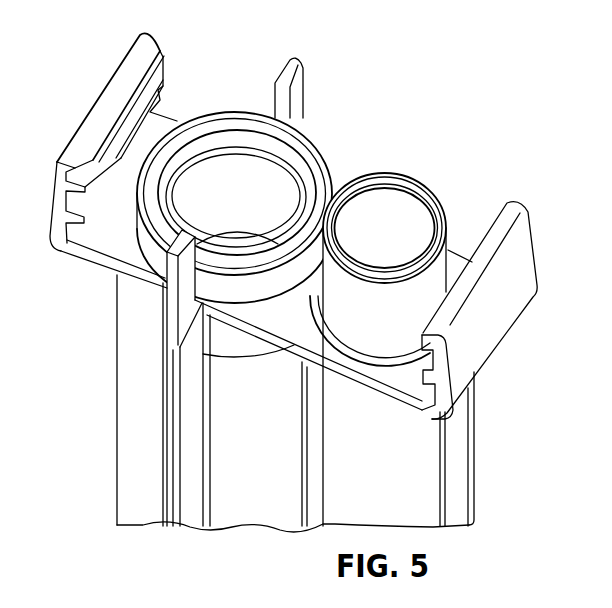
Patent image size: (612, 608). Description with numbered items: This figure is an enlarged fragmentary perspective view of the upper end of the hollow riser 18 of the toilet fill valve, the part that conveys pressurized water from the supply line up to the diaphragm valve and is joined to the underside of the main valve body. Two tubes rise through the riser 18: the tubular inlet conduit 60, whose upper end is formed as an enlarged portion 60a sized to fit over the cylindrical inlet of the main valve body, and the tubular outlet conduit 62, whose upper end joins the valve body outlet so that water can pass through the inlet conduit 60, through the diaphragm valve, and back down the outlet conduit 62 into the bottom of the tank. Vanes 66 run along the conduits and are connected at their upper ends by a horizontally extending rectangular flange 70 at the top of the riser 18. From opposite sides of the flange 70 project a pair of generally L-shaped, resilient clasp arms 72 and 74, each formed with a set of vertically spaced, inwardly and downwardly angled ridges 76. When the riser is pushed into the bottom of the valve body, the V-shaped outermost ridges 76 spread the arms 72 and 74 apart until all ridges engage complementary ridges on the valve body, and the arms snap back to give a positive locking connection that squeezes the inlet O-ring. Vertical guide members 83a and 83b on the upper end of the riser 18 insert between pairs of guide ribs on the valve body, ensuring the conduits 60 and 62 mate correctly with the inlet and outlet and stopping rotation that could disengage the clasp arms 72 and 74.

The riser 18 is at (488, 475).
The inlet conduit 60 is at (245, 100).
The enlarged portion 60a is at (305, 150).
The outlet conduit 62 is at (407, 174).
The vanes 66 is at (128, 403).
The rectangular flange 70 is at (102, 243).
The clasp arm 72 is at (108, 88).
The clasp arm 74 is at (499, 329).
The ridges 76 is at (166, 60).
The vertical guide member 83a is at (305, 80).
The vertical guide member 83b is at (190, 231).